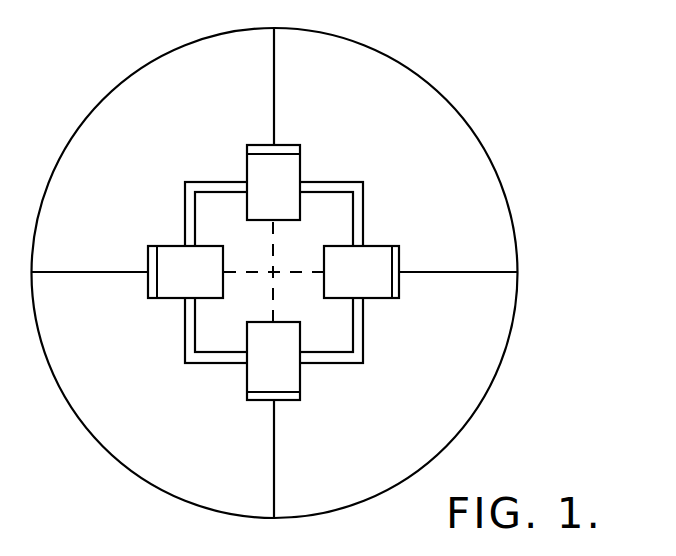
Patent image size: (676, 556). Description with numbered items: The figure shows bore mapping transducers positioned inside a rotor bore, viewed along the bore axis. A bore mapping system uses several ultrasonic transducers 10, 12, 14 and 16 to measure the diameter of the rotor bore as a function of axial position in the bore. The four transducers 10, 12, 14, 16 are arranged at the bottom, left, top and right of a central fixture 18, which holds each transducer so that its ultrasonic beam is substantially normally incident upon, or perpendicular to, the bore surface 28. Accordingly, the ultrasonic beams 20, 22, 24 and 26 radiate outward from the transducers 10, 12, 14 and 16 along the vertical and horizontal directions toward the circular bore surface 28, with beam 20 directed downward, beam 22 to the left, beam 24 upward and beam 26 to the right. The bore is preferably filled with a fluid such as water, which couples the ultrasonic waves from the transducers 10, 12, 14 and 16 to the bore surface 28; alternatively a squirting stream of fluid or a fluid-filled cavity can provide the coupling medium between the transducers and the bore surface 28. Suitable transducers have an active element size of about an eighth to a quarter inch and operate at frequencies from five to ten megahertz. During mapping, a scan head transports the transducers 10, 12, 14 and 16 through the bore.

The ultrasonic transducer 10 is at (248, 380).
The ultrasonic transducer 12 is at (170, 246).
The ultrasonic transducer 14 is at (248, 172).
The ultrasonic transducer 16 is at (382, 247).
The fixture 18 is at (330, 181).
The ultrasonic beam 20 is at (274, 448).
The ultrasonic beam 22 is at (122, 273).
The ultrasonic beam 24 is at (274, 95).
The ultrasonic beam 26 is at (452, 273).
The bore surface 28 is at (436, 85).